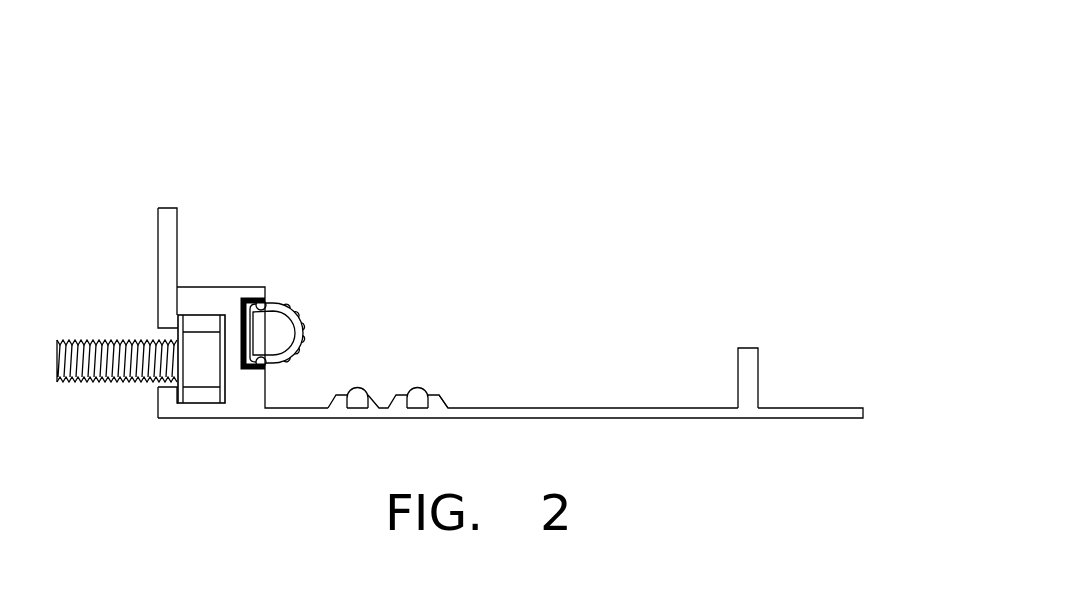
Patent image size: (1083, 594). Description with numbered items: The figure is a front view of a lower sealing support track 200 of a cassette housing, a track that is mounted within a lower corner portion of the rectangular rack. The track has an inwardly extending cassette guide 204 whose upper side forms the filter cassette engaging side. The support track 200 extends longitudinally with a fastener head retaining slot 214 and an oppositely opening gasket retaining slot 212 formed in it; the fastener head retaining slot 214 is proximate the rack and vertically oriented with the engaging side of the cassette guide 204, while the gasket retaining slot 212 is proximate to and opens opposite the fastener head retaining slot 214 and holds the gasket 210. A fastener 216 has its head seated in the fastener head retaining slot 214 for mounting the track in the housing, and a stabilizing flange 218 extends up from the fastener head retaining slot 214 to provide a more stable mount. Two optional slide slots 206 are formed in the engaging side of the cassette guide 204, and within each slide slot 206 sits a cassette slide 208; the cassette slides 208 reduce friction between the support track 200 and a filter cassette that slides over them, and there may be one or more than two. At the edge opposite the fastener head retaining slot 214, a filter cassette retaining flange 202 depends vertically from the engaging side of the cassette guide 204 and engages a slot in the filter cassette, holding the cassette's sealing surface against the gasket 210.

The lower sealing support track 200 is at (712, 98).
The filter cassette retaining flange 202 is at (749, 355).
The cassette guide 204 is at (637, 418).
The slide slot 206 is at (442, 404).
The cassette slide 208 is at (416, 392).
The gasket 210 is at (310, 335).
The gasket retaining slot 212 is at (262, 303).
The fastener head retaining slot 214 is at (205, 410).
The fastener 216 is at (83, 340).
The stabilizing flange 218 is at (163, 242).